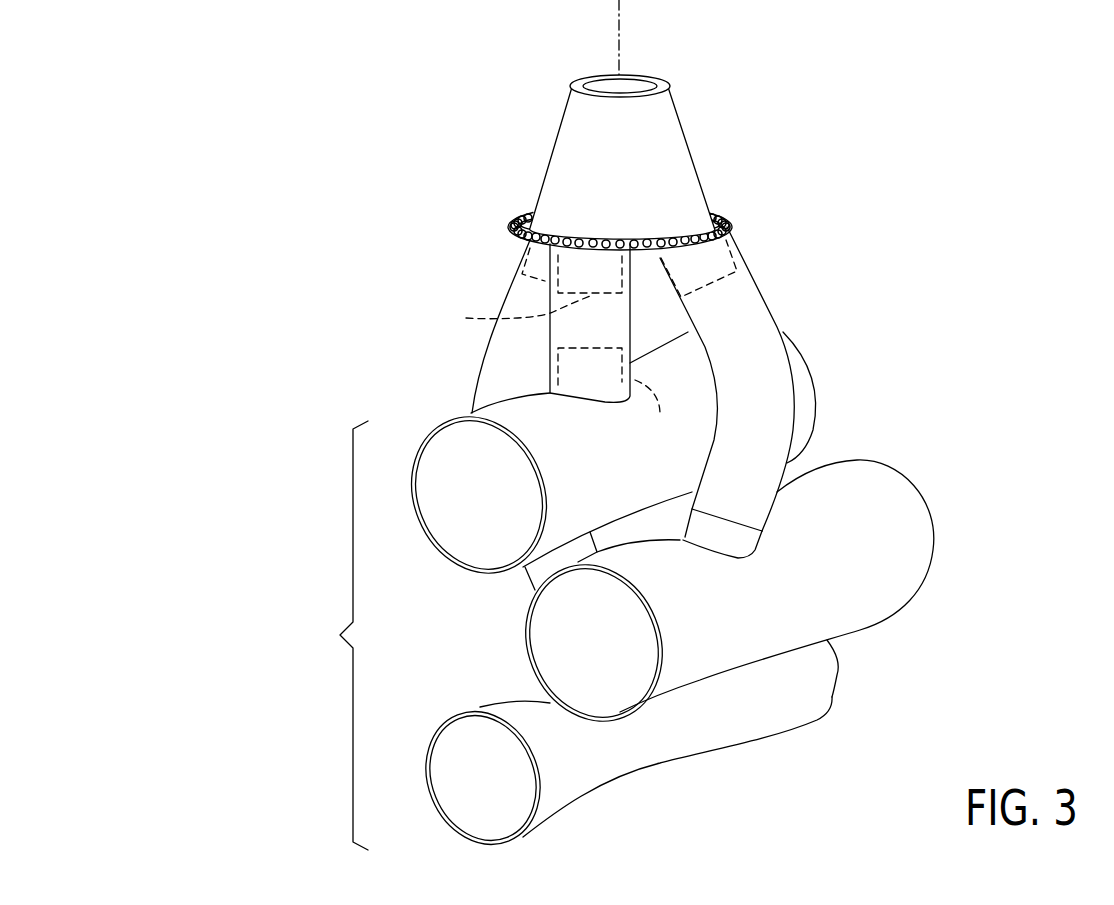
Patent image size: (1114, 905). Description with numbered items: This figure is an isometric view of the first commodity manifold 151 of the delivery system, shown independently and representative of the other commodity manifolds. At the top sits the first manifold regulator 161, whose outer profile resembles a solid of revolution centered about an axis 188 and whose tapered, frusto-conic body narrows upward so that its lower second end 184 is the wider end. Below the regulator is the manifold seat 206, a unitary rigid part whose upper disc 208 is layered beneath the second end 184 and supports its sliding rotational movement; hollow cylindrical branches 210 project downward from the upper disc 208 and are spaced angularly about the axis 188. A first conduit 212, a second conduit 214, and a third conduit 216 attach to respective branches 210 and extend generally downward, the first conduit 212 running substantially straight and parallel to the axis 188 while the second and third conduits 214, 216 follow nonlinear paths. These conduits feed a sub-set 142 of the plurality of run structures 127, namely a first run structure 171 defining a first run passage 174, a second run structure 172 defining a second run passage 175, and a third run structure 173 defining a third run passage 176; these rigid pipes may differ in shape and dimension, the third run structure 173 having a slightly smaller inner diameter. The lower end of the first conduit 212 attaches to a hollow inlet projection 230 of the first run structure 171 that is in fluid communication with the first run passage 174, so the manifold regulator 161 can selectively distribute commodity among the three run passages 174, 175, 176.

The run structures 127 is at (321, 435).
The sub-set of run structures 142 is at (332, 635).
The first commodity manifold 151 is at (403, 136).
The first manifold regulator 161 is at (637, 178).
The first run structure 171 is at (608, 473).
The second run structure 172 is at (822, 587).
The third run structure 173 is at (693, 740).
The first run passage 174 is at (457, 533).
The second run passage 175 is at (550, 658).
The third run passage 176 is at (465, 808).
The second end 184 is at (711, 213).
The axis 188 is at (619, 43).
The manifold seat 206 is at (642, 262).
The upper disc 208 is at (520, 293).
The branches 210 is at (523, 320).
The first conduit 212 is at (568, 328).
The second conduit 214 is at (743, 292).
The third conduit 216 is at (518, 295).
The inlet projection 230 is at (657, 416).